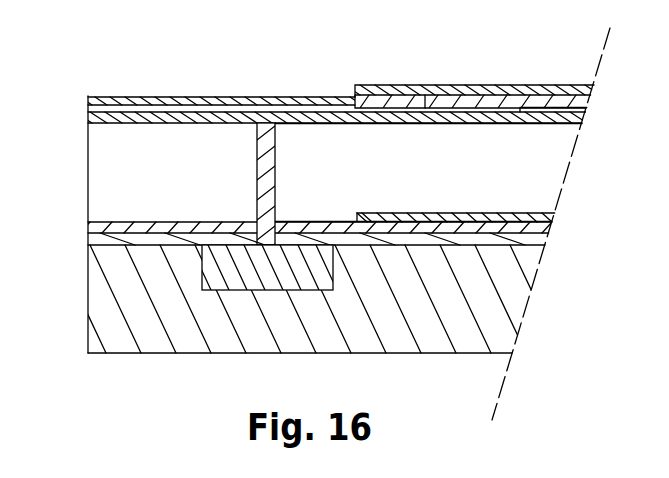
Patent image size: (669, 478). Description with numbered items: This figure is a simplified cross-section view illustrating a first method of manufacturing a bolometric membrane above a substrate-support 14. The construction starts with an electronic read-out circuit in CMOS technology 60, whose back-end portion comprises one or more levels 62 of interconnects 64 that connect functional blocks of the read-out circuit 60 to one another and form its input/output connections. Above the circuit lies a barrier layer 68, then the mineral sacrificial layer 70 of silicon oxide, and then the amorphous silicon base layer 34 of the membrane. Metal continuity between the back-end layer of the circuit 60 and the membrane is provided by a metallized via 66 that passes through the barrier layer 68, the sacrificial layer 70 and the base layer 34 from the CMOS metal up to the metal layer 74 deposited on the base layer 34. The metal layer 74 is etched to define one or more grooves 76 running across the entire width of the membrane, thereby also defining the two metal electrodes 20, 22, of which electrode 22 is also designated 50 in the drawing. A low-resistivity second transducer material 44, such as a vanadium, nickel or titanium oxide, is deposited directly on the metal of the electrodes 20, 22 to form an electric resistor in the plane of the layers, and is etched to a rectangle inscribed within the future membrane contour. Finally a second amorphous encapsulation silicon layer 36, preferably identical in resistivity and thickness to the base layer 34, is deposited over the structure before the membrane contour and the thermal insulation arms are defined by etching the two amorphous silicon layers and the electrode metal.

The substrate-support 14 is at (108, 222).
The metal electrode 20 is at (140, 103).
The base layer 34 is at (201, 115).
The metal layer 74 is at (293, 107).
The metallized via 66 is at (265, 144).
The mineral sacrificial layer 70 is at (337, 163).
The second amorphous encapsulation silicon layer 36 is at (395, 90).
The second transducer material 44 is at (456, 102).
The groove 76 is at (497, 110).
The metal electrode 22 is at (561, 74).
The conductive layer 50 is at (577, 112).
The barrier layer 68 is at (88, 230).
The interconnect level 62 is at (80, 245).
The electronic read-out circuit 60 is at (505, 315).
The interconnect 64 is at (237, 267).